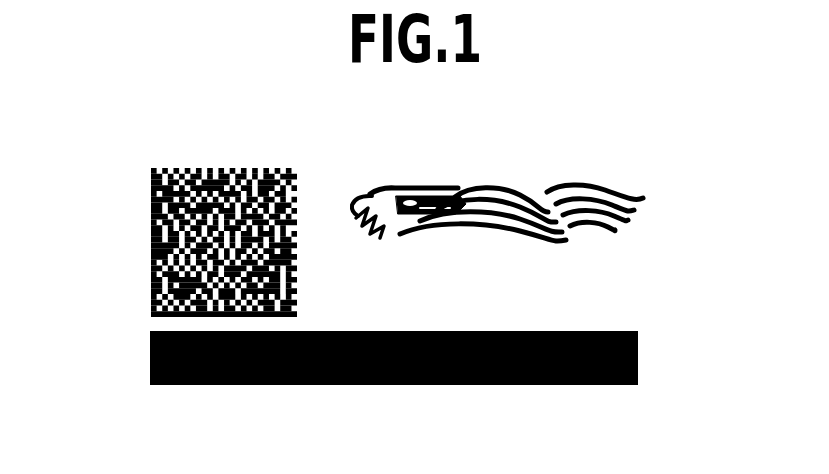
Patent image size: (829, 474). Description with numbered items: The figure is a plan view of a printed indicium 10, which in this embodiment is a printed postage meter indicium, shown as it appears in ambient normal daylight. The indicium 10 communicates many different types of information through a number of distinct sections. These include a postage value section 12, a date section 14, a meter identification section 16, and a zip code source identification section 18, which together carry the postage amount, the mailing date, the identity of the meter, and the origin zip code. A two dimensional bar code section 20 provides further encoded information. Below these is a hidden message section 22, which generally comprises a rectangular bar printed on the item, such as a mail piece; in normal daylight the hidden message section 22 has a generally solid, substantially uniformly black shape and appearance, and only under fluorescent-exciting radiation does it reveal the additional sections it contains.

The printed indicium 10 is at (118, 188).
The postage value section 12 is at (636, 228).
The date section 14 is at (642, 275).
The meter identification section 16 is at (323, 248).
The zip code source identification section 18 is at (640, 311).
The two dimensional bar code section 20 is at (148, 283).
The hidden message section 22 is at (560, 388).